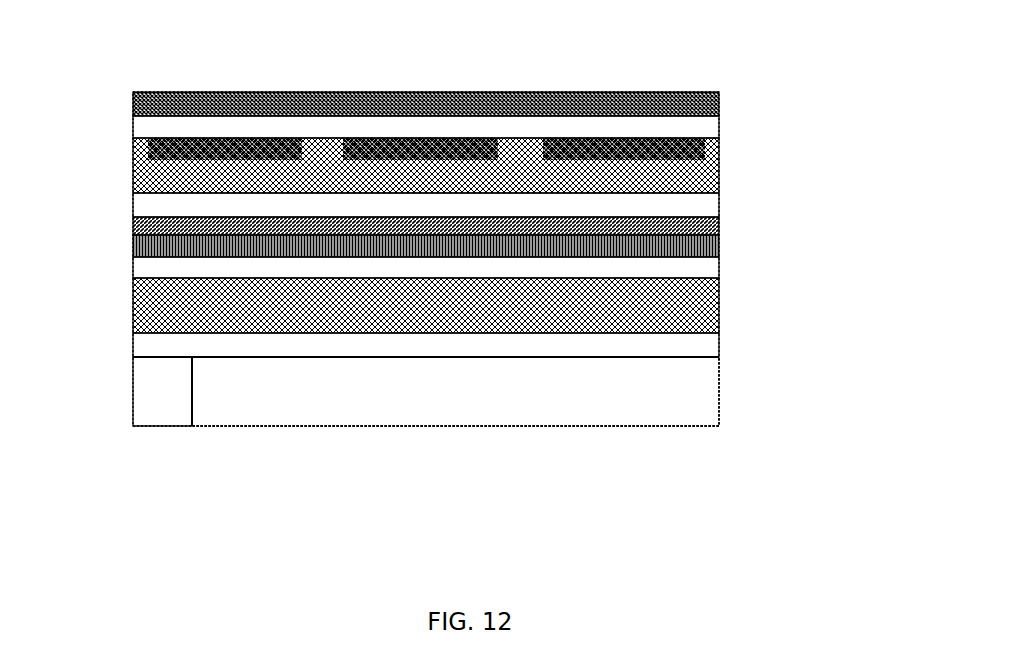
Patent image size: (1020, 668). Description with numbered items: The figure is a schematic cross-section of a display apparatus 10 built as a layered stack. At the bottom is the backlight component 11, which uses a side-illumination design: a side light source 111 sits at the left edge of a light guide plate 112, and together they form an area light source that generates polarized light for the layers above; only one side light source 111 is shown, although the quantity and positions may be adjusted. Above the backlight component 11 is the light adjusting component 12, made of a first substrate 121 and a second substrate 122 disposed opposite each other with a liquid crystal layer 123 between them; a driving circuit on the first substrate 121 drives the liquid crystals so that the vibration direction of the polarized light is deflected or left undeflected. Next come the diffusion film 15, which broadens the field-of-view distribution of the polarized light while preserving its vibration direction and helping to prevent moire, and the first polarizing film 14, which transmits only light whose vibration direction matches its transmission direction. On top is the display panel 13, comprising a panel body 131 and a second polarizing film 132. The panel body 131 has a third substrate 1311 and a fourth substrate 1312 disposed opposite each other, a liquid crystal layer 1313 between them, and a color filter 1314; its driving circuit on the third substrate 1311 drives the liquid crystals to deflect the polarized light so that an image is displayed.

The display apparatus 10 is at (145, 53).
The backlight component 11 is at (150, 490).
The side light source 111 is at (162, 412).
The light guide plate 112 is at (225, 412).
The light adjusting component 12 is at (120, 262).
The first substrate 121 is at (708, 268).
The second substrate 122 is at (708, 343).
The liquid crystal layer 123 is at (708, 305).
The display panel 13 is at (120, 92).
The panel body 131 is at (845, 118).
The third substrate 1311 is at (708, 127).
The fourth substrate 1312 is at (706, 205).
The liquid crystal layer 1313 is at (710, 183).
The color filter 1314 is at (710, 155).
The second polarizing film 132 is at (720, 97).
The first polarizing film 14 is at (130, 232).
The diffusion film 15 is at (130, 250).